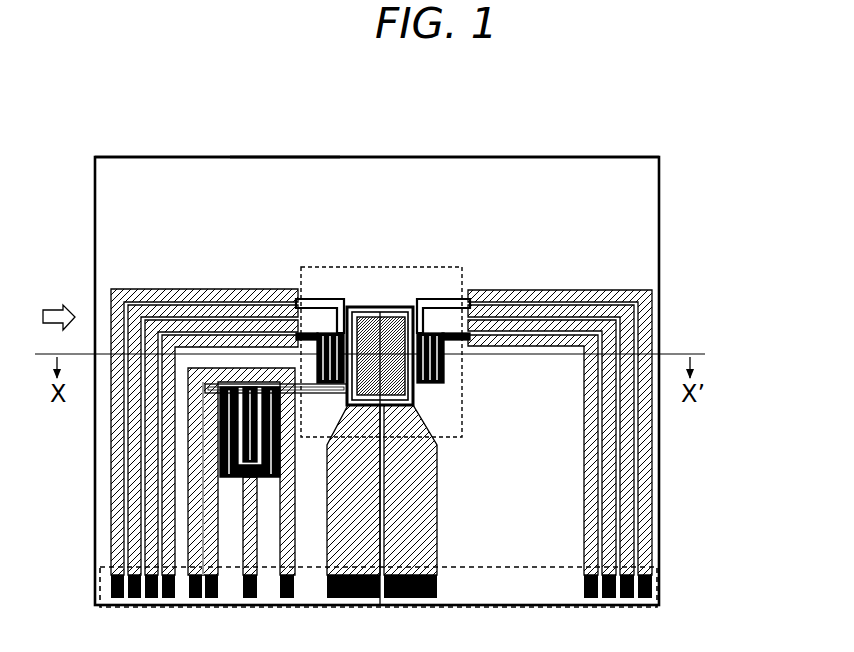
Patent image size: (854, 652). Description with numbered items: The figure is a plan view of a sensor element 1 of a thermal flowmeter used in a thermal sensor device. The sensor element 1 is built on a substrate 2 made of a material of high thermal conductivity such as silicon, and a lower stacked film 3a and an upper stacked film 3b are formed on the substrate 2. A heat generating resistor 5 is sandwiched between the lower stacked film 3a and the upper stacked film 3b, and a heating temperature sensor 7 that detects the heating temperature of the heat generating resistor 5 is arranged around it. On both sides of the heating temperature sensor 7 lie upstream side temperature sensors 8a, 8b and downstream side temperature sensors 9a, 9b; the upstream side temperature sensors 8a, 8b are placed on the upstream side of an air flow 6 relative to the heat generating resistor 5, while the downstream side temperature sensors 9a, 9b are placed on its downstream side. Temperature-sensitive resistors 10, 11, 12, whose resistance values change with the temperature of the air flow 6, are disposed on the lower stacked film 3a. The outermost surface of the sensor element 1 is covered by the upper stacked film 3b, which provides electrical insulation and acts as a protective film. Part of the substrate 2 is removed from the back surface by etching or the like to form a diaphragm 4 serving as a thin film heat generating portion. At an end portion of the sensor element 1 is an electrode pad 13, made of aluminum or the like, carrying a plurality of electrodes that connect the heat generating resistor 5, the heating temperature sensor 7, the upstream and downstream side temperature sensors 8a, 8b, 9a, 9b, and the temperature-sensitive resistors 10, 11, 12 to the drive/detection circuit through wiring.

The sensor element 1 is at (112, 128).
The substrate 2 is at (232, 156).
The lower stacked film 3a is at (280, 156).
The upper stacked film 3b is at (316, 156).
The diaphragm 4 is at (463, 423).
The heat generating resistor 5 is at (378, 312).
The air flow 6 is at (57, 309).
The heating temperature sensor 7 is at (400, 310).
The upstream side temperature sensor 8a is at (328, 336).
The upstream side temperature sensor 8b is at (341, 312).
The downstream side temperature sensor 9a is at (437, 333).
The downstream side temperature sensor 9b is at (448, 312).
The temperature-sensitive resistor 10 is at (248, 387).
The temperature-sensitive resistor 11 is at (263, 402).
The temperature-sensitive resistor 12 is at (212, 395).
The electrode pad 13 is at (540, 566).